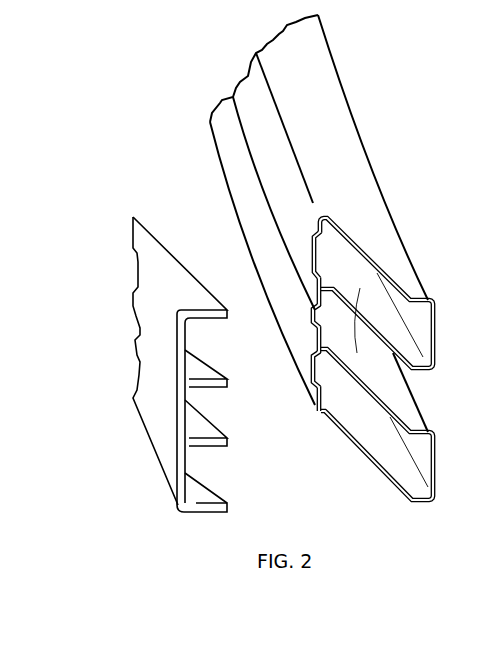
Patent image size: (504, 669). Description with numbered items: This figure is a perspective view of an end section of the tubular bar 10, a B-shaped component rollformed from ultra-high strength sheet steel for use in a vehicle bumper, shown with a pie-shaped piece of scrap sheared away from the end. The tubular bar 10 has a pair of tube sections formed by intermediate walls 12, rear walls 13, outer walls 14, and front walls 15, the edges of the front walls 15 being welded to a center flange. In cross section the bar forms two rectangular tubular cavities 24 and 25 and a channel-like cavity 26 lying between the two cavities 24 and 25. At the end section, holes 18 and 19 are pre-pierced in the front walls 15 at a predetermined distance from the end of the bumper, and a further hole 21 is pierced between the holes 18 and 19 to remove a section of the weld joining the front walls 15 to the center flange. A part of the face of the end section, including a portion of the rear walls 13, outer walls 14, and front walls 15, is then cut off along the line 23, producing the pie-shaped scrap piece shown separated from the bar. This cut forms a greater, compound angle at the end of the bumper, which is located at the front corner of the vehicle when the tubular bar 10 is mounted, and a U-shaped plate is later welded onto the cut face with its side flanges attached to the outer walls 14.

The tubular bar 10 is at (221, 97).
The intermediate walls 12 is at (358, 286).
The rear walls 13 is at (437, 315).
The outer walls 14 is at (316, 109).
The front walls 15 is at (256, 143).
The hole 18 is at (312, 384).
The hole 19 is at (311, 250).
The hole 21 is at (311, 314).
The cut line 23 is at (148, 316).
The rectangular tubular cavity 24 is at (422, 455).
The rectangular tubular cavity 25 is at (422, 330).
The channel-like cavity 26 is at (427, 397).